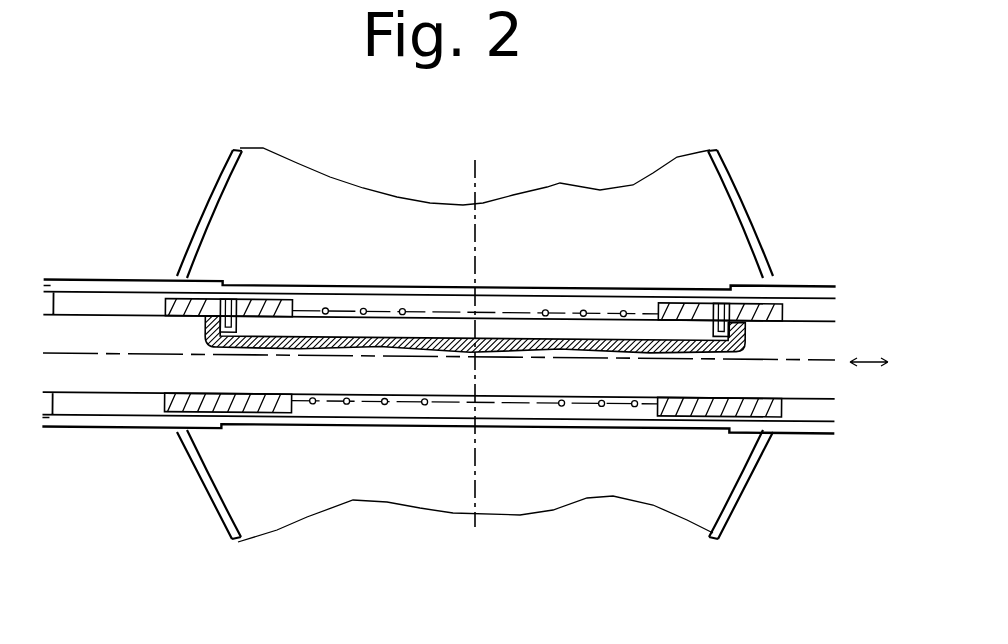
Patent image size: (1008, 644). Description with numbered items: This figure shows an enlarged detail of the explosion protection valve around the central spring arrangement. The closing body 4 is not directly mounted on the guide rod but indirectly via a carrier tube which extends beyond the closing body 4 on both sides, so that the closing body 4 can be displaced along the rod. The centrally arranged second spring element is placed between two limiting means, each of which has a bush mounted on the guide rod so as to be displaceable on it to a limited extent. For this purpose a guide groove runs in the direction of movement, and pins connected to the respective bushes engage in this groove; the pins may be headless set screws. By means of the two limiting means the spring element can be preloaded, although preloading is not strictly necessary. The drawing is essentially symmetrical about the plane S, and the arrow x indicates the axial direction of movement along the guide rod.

The closing body 4 is at (450, 382).
The plane of symmetry S is at (482, 327).
The axial direction x is at (869, 348).